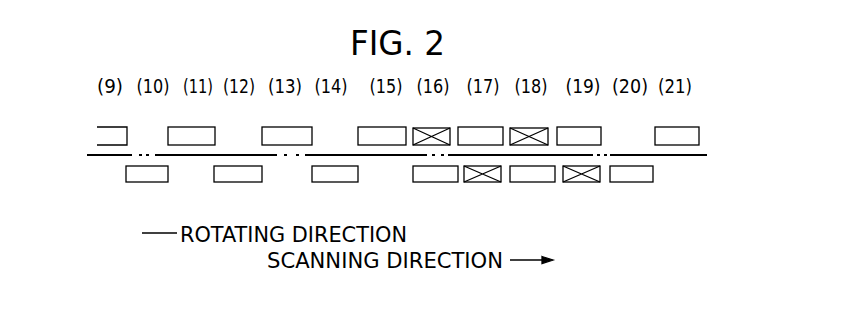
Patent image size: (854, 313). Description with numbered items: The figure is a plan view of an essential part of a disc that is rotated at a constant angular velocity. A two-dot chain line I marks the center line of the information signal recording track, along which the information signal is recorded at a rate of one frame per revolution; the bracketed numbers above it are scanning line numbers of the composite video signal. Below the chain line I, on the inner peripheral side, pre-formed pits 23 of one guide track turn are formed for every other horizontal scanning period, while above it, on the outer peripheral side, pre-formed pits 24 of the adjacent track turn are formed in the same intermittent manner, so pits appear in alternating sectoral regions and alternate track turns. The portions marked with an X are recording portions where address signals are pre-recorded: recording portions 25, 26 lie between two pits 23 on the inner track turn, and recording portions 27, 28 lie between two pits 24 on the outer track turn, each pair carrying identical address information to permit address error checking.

The two-dot chain line I is at (90, 153).
The pre-formed pits 23 is at (145, 182).
The pre-formed pits 24 is at (110, 127).
The recording portion 25 is at (479, 182).
The recording portion 26 is at (583, 182).
The recording portion 27 is at (428, 128).
The recording portion 28 is at (526, 128).